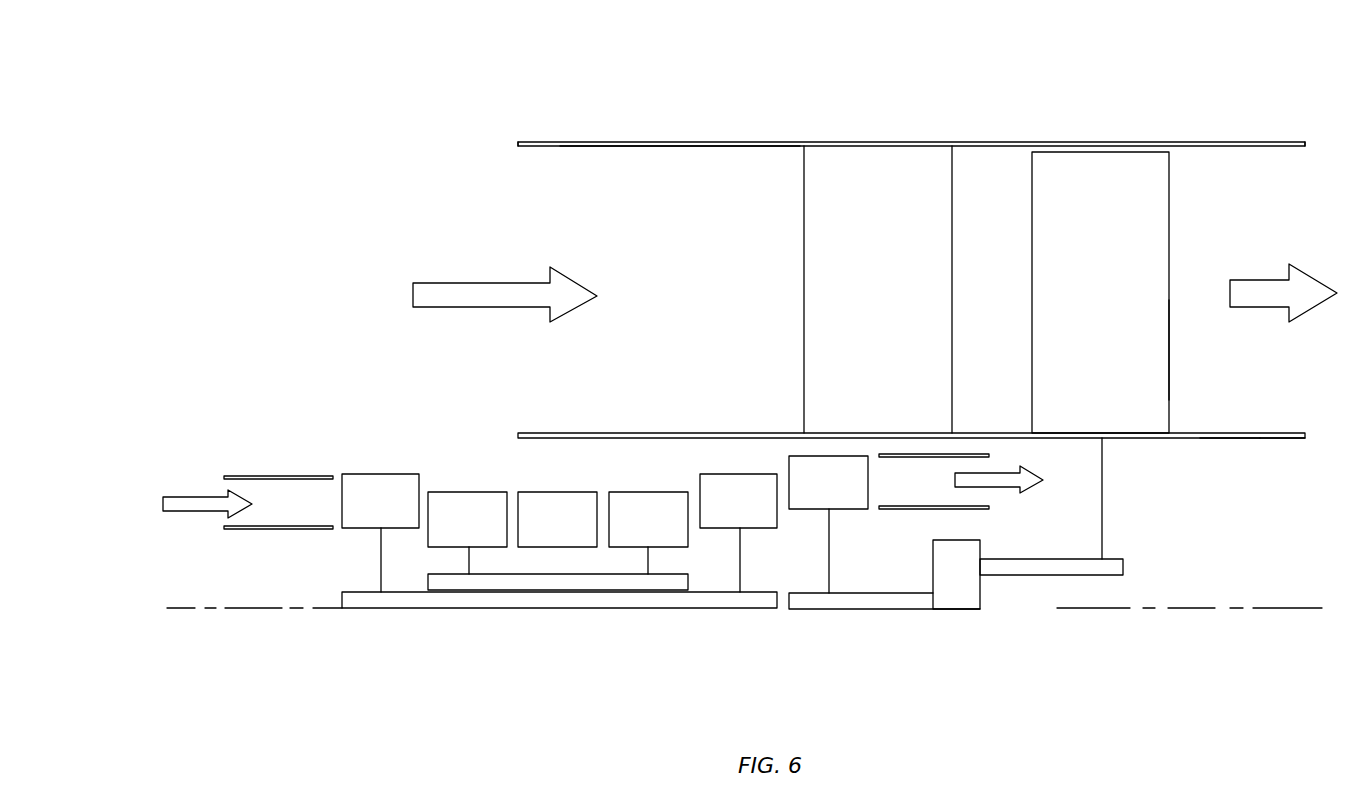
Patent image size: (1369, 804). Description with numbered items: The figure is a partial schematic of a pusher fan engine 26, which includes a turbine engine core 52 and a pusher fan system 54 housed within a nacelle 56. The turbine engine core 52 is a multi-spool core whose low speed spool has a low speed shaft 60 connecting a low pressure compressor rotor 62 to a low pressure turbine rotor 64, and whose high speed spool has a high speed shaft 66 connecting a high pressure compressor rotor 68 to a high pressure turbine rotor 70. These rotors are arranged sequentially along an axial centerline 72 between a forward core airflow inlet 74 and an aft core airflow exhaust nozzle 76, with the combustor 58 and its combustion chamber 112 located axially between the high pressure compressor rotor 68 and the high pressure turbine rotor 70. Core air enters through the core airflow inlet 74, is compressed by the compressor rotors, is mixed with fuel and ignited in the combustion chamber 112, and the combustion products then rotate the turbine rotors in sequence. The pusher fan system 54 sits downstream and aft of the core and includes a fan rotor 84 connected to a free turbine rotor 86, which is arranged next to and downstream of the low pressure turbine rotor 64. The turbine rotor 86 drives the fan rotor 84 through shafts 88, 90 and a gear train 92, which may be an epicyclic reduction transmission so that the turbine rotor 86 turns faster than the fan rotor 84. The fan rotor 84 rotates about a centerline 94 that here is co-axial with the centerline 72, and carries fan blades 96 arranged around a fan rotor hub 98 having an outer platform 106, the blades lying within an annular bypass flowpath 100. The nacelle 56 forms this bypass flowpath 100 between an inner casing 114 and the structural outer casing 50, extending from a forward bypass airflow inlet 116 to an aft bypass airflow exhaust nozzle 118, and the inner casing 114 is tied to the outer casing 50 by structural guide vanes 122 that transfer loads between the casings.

The pusher fan engine 26 is at (385, 130).
The outer casing 50 is at (599, 148).
The turbine engine core 52 is at (366, 623).
The pusher fan system 54 is at (1140, 498).
The nacelle 56 is at (653, 141).
The combustor 58 is at (559, 470).
The low speed shaft 60 is at (420, 608).
The low pressure compressor rotor 62 is at (378, 474).
The low pressure turbine rotor 64 is at (727, 474).
The high speed shaft 66 is at (510, 590).
The high pressure compressor rotor 68 is at (469, 492).
The high pressure turbine rotor 70 is at (648, 492).
The axial centerline 72 is at (187, 608).
The core airflow inlet 74 is at (224, 528).
The core airflow exhaust nozzle 76 is at (989, 508).
The fan rotor 84 is at (1171, 348).
The turbine rotor 86 is at (849, 491).
The shaft 88 is at (860, 609).
The shaft 90 is at (1040, 575).
The gear train 92 is at (953, 593).
The centerline 94 is at (1260, 608).
The fan blades 96 is at (1169, 202).
The fan rotor hub 98 is at (1252, 438).
The bypass flowpath 100 is at (676, 315).
The outer platform 106 is at (1298, 432).
The combustion chamber 112 is at (577, 531).
The inner casing 114 is at (540, 432).
The bypass airflow inlet 116 is at (517, 148).
The bypass airflow exhaust nozzle 118 is at (1305, 148).
The guide vanes 122 is at (804, 241).